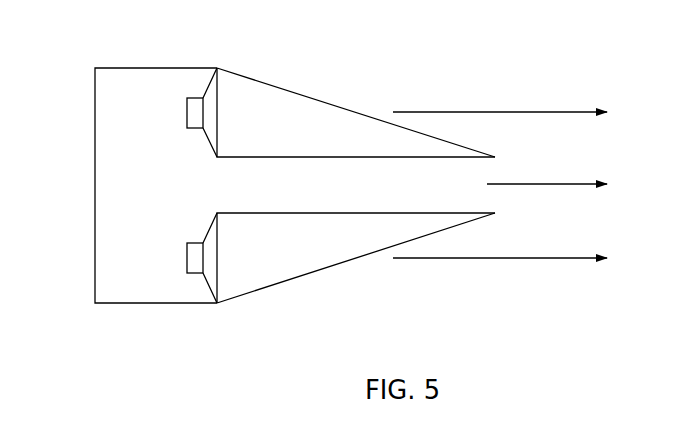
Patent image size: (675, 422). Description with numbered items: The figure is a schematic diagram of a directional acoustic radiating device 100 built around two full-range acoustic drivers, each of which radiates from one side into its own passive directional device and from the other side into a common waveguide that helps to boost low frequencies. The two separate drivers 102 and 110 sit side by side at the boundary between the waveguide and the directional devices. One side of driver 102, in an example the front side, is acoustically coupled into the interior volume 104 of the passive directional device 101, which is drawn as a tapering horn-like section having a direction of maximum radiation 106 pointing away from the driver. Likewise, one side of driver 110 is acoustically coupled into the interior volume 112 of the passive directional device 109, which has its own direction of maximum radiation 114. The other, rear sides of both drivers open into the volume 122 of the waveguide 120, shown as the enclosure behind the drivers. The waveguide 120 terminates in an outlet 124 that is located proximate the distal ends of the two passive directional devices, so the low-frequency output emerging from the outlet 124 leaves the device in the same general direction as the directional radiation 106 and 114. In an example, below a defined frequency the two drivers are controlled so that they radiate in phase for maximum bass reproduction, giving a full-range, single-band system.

The directional acoustic radiating device 100 is at (320, 189).
The passive directional device 101 is at (323, 278).
The driver 102 is at (212, 272).
The interior volume 104 is at (260, 280).
The direction of maximum radiation 106 is at (533, 258).
The passive directional device 109 is at (323, 85).
The driver 110 is at (206, 92).
The interior volume 112 is at (280, 112).
The direction of maximum radiation 114 is at (462, 112).
The waveguide 120 is at (453, 183).
The volume 122 is at (123, 188).
The outlet 124 is at (547, 184).